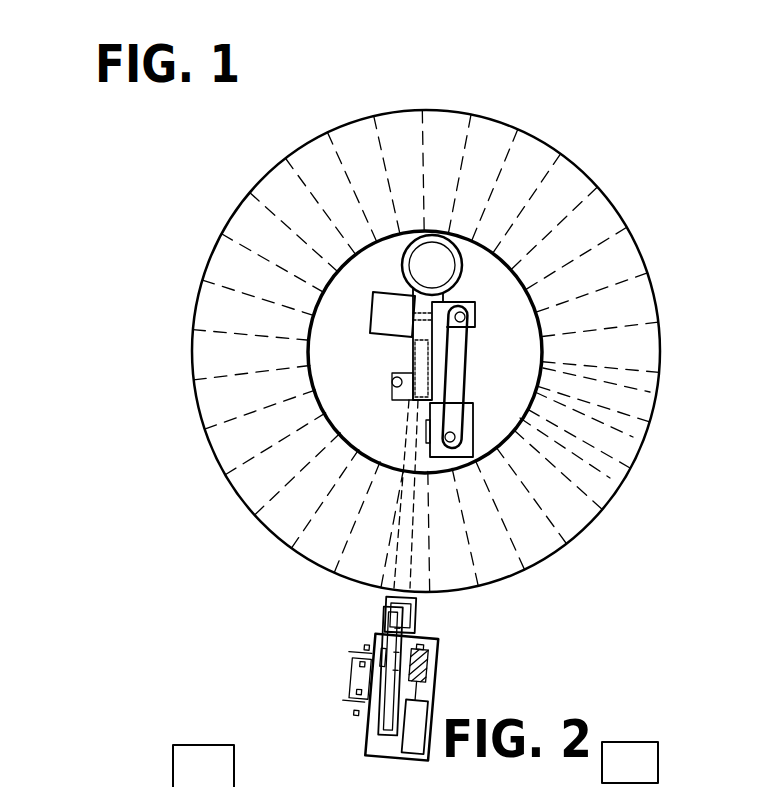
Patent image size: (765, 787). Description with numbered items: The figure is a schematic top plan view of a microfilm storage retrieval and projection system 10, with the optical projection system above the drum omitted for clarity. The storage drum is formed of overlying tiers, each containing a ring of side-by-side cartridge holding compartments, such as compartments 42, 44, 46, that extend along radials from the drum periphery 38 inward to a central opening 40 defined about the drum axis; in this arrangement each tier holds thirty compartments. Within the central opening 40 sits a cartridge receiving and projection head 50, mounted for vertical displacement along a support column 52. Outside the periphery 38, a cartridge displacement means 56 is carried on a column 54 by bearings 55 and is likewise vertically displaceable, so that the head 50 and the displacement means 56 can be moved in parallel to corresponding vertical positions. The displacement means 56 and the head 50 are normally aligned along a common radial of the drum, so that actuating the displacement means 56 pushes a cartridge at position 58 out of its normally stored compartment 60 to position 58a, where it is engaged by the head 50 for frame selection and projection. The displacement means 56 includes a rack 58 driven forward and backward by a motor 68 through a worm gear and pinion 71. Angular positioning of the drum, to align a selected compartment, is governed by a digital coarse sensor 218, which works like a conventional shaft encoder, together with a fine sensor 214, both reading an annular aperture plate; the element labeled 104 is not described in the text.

The microfilm storage retrieval and projection system 10 is at (150, 363).
The periphery of drum 38 is at (658, 400).
The central opening 40 is at (350, 355).
The cartridge holding compartment 42 is at (630, 398).
The cartridge holding compartment 44 is at (622, 447).
The cartridge holding compartment 46 is at (592, 488).
The cartridge receiving and projection head 50 is at (478, 345).
The support column 52 is at (432, 268).
The column 54 is at (346, 678).
The bearings 55 is at (365, 648).
The cartridge displacement means 56 is at (447, 658).
The rack 58 is at (398, 574).
The cartridge position 58a is at (411, 410).
The compartment 60 is at (390, 572).
The motor 68 is at (404, 745).
The pinion 71 is at (427, 670).
The pivot 104 is at (392, 382).
The fine sensor 214 is at (649, 742).
The digital coarse sensor 218 is at (218, 745).